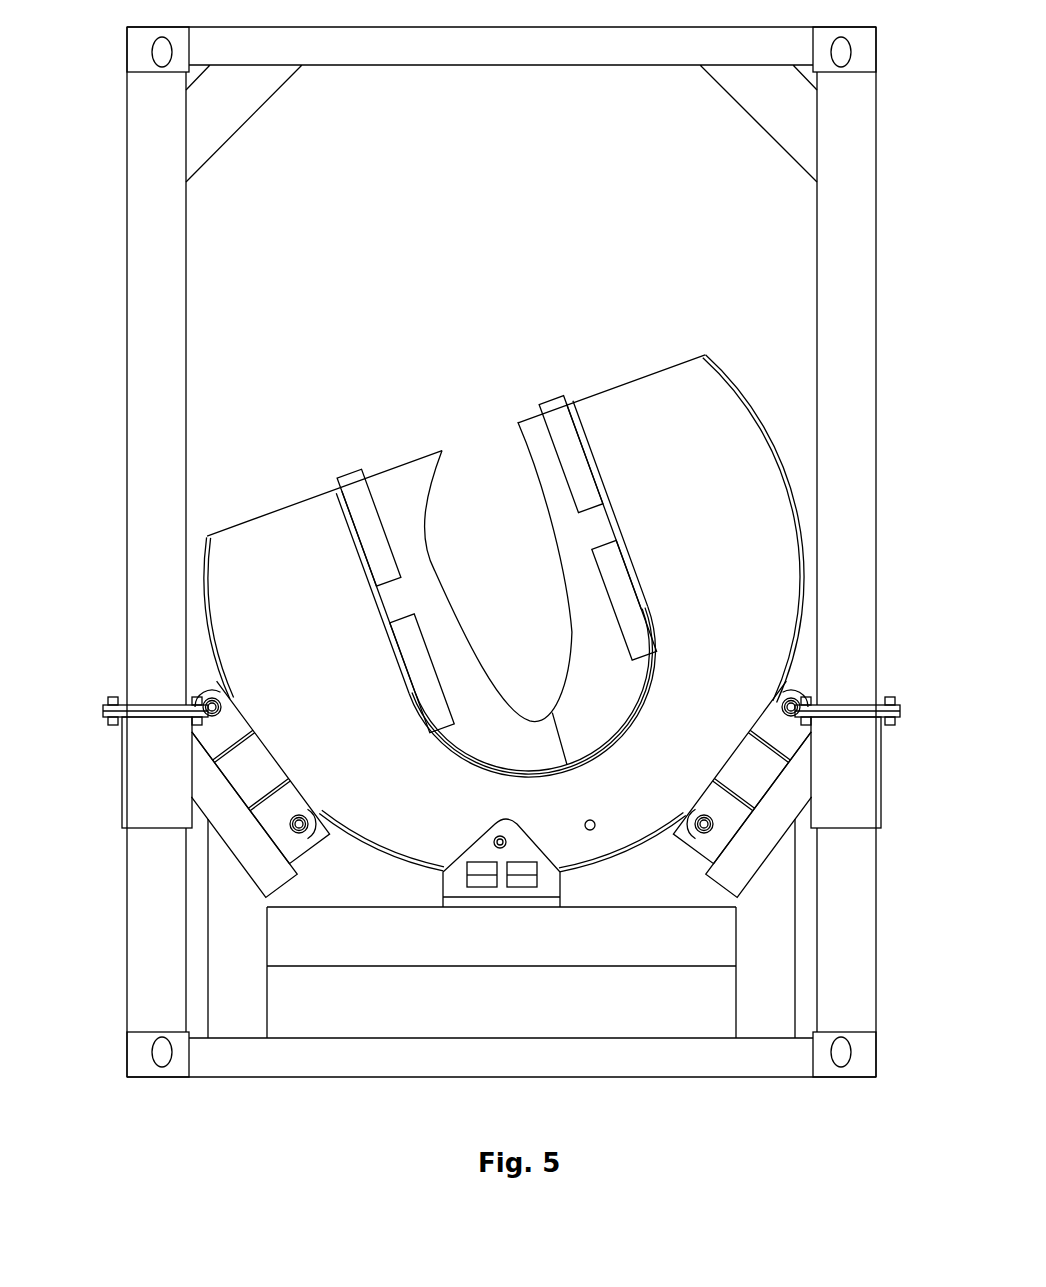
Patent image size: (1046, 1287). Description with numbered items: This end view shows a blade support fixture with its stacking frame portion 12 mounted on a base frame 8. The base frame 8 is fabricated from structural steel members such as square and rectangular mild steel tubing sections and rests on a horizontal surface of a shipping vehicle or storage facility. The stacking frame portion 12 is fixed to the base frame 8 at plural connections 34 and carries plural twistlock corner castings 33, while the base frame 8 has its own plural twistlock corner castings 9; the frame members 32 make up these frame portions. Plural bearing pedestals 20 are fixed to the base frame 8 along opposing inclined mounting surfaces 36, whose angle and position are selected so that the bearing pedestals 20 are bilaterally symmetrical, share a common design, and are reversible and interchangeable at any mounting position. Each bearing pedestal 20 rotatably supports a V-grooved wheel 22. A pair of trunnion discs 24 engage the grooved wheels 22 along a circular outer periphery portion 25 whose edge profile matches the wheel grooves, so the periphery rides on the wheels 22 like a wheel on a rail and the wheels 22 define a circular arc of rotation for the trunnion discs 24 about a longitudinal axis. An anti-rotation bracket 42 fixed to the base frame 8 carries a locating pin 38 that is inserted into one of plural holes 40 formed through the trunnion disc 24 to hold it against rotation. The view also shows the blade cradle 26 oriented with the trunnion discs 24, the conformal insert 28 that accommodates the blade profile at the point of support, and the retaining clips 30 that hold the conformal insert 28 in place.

The base frame 8 is at (127, 955).
The twistlock corner castings 9 is at (127, 1050).
The stacking frame portion 12 is at (127, 300).
The bearing pedestals 20 is at (265, 767).
The grooved wheels 22 is at (225, 705).
The trunnion discs 24 is at (262, 514).
The circular outer periphery portion 25 is at (205, 617).
The blade cradle 26 is at (385, 605).
The conformal insert 28 is at (572, 626).
The retaining clips 30 is at (372, 503).
The frame beam 32 is at (596, 27).
The twistlock corner castings 33 is at (127, 27).
The connections 34 is at (103, 710).
The inclined mounting surfaces 36 is at (290, 873).
The locating pin 38 is at (500, 836).
The holes 40 is at (585, 820).
The anti-rotation bracket 42 is at (465, 851).